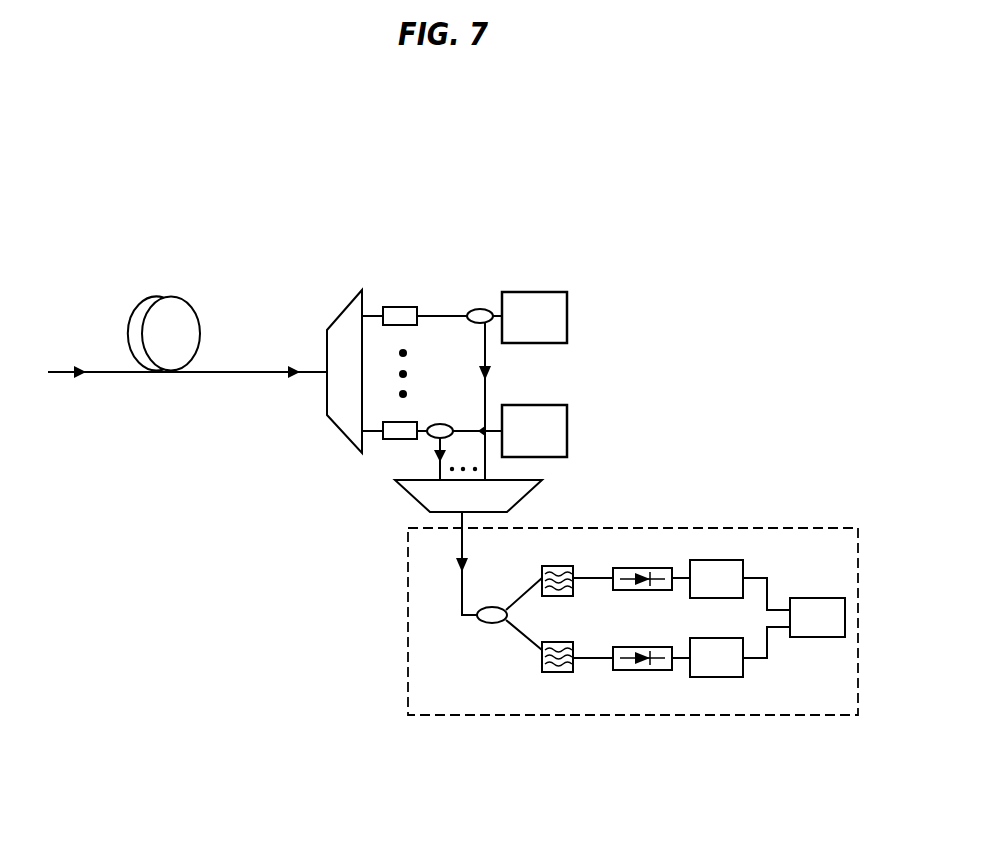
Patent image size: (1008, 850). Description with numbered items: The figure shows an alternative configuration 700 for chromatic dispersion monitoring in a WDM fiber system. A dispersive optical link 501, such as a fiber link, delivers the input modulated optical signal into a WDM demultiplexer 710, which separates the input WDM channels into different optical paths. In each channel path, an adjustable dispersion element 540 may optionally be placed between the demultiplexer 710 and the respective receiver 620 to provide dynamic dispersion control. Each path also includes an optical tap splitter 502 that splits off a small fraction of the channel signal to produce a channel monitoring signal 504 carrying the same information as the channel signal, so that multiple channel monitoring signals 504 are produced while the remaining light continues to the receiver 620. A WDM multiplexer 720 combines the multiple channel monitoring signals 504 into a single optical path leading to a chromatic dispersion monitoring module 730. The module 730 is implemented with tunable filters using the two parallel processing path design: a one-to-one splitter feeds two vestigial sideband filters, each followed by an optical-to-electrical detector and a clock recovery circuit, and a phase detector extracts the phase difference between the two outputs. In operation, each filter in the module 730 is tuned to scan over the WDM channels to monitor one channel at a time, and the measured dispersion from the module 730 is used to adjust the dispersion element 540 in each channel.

The chromatic dispersion monitoring configuration 700 is at (551, 222).
The dispersive optical link 501 is at (182, 297).
The WDM demultiplexer 710 is at (337, 315).
The adjustable dispersion element 540 is at (415, 308).
The optical splitter (tap) 502 is at (478, 309).
The channel monitoring signal 504 is at (487, 350).
The receiver 620 is at (567, 316).
The WDM multiplexer 720 is at (537, 490).
The chromatic dispersion monitoring module 730 is at (510, 717).